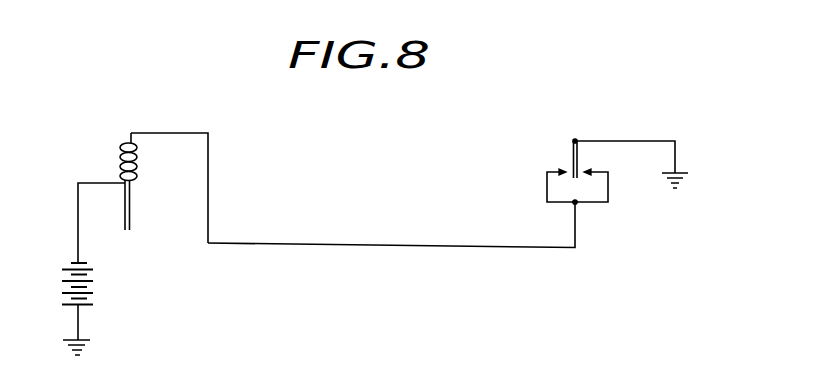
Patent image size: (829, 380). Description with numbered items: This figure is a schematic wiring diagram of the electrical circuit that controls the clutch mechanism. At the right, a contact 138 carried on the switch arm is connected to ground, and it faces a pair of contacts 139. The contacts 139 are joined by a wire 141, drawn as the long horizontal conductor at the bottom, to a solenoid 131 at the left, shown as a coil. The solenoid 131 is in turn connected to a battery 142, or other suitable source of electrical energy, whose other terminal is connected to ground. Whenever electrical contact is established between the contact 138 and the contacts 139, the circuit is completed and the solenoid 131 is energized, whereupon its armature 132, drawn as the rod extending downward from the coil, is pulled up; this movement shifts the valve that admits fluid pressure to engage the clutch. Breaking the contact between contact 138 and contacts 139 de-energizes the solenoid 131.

The solenoid 131 is at (121, 149).
The armature 132 is at (130, 222).
The contact 138 is at (572, 162).
The contacts 139 is at (592, 204).
The wire 141 is at (377, 245).
The battery 142 is at (89, 294).